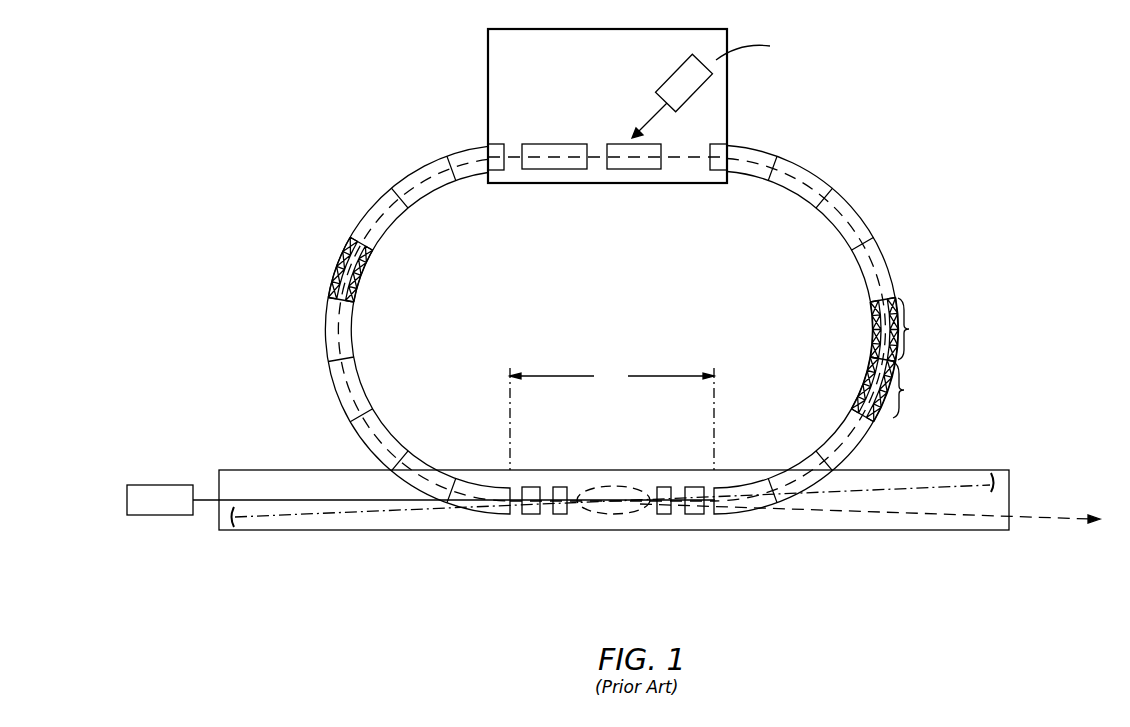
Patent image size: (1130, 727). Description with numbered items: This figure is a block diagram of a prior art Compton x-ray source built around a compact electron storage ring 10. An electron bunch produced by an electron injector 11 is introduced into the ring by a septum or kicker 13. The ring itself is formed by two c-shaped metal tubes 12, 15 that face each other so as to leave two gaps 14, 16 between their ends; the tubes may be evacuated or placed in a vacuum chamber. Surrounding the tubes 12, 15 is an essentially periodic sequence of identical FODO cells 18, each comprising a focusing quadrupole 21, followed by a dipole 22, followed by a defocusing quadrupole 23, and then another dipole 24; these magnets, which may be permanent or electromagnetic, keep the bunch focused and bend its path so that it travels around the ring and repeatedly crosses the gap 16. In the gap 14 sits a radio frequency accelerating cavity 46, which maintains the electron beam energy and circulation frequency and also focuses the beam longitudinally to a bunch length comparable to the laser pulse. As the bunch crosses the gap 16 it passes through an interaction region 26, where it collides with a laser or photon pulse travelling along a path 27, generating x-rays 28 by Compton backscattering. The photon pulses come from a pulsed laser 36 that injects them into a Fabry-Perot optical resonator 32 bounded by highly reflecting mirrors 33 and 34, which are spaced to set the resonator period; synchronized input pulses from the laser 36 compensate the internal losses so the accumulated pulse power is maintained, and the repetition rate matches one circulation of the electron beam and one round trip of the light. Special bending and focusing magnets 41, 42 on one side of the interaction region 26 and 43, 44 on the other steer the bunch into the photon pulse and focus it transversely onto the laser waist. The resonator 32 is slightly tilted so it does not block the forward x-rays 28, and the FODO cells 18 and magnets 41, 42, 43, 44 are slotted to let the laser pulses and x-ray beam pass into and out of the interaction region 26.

The compact electron storage ring 10 is at (352, 175).
The electron injector 11 is at (673, 70).
The c-shaped metal tube 12 is at (893, 294).
The septum or kicker 13 is at (645, 170).
The gap 14 is at (594, 190).
The c-shaped metal tube 15 is at (337, 266).
The gap 16 is at (612, 417).
The FODO cell 18 is at (328, 372).
The focusing quadrupole 21 is at (367, 253).
The dipole 22 is at (362, 270).
The defocusing quadrupole 23 is at (358, 280).
The dipole 24 is at (355, 297).
The interaction region 26 is at (613, 514).
The path 27 is at (388, 508).
The x-rays 28 is at (1032, 517).
The Fabry-Perot optical resonator 32 is at (877, 531).
The mirror 33 is at (232, 522).
The mirror 34 is at (997, 477).
The pulsed laser 36 is at (160, 516).
The bending and focusing magnet 41 is at (532, 514).
The bending and focusing magnet 42 is at (558, 485).
The bending and focusing magnet 43 is at (663, 485).
The bending and focusing magnet 44 is at (693, 514).
The radio frequency accelerating cavity 46 is at (563, 172).